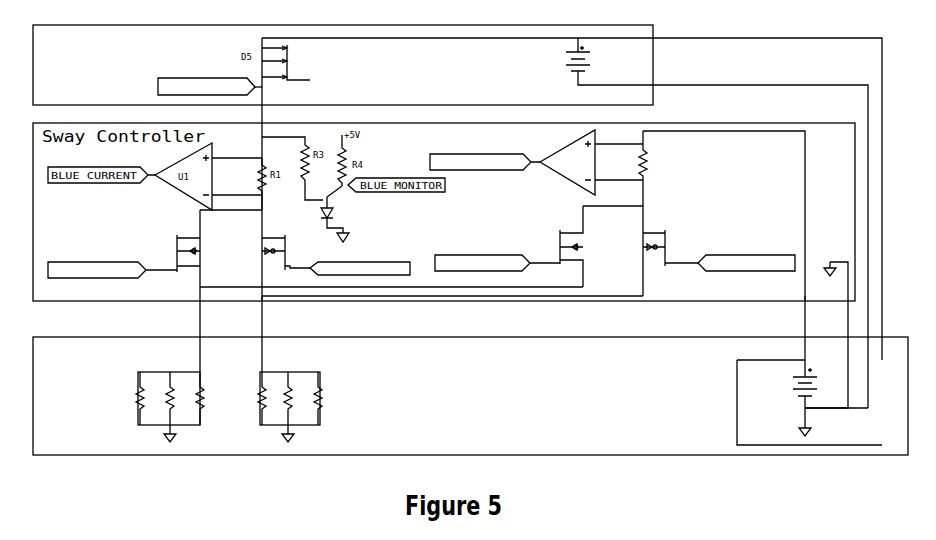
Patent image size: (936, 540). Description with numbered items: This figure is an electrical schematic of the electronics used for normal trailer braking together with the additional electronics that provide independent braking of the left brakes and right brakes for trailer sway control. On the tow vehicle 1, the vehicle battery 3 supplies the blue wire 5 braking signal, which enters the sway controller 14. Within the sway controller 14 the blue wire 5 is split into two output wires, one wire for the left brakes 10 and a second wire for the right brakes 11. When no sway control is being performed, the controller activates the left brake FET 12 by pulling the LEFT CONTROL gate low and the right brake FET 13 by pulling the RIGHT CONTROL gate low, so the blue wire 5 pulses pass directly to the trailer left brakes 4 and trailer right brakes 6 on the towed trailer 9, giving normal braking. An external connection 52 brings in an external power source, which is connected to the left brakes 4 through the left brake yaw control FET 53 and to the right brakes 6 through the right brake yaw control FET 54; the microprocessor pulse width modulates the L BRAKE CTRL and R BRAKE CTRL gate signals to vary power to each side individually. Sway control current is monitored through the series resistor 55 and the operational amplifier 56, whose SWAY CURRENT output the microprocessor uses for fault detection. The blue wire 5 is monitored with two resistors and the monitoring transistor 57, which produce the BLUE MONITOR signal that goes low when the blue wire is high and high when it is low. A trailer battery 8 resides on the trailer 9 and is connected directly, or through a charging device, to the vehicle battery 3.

The tow vehicle 1 is at (343, 65).
The vehicle battery 3 is at (577, 77).
The trailer left brakes 4 is at (200, 413).
The blue wire 5 is at (265, 117).
The trailer right brakes 6 is at (325, 403).
The trailer battery 8 is at (792, 398).
The towed trailer 9 is at (470, 396).
The left brakes output wire 10 is at (200, 328).
The right brakes output wire 11 is at (267, 327).
The FET Q1 12 is at (172, 258).
The FET Q2 13 is at (322, 239).
The sway controller 14 is at (827, 281).
The external connection 52 is at (805, 330).
The FET Q3 53 is at (560, 252).
The FET Q4 54 is at (673, 252).
The series resistor R2 55 is at (660, 172).
The operational amplifier U2 56 is at (563, 173).
The transistor Q6 57 is at (357, 208).